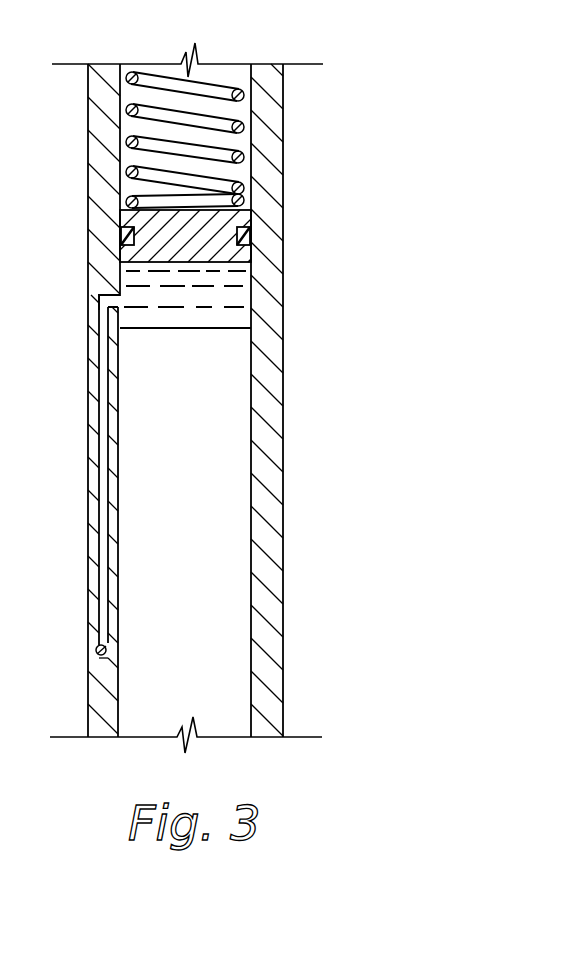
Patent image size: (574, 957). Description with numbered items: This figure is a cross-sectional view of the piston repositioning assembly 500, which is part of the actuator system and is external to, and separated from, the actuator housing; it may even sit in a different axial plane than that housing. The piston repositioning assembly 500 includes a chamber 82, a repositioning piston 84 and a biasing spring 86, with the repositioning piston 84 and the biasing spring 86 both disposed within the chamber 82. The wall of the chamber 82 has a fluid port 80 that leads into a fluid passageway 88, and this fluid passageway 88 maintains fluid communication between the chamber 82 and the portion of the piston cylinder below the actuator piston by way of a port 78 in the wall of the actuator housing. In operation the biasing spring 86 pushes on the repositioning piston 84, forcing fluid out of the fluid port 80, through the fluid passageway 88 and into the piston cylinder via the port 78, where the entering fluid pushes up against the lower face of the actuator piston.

The piston repositioning assembly 500 is at (125, 124).
The biasing spring 86 is at (248, 125).
The repositioning piston 84 is at (240, 218).
The chamber 82 is at (215, 298).
The fluid port 80 is at (118, 292).
The fluid passageway 88 is at (105, 440).
The port 78 is at (97, 646).